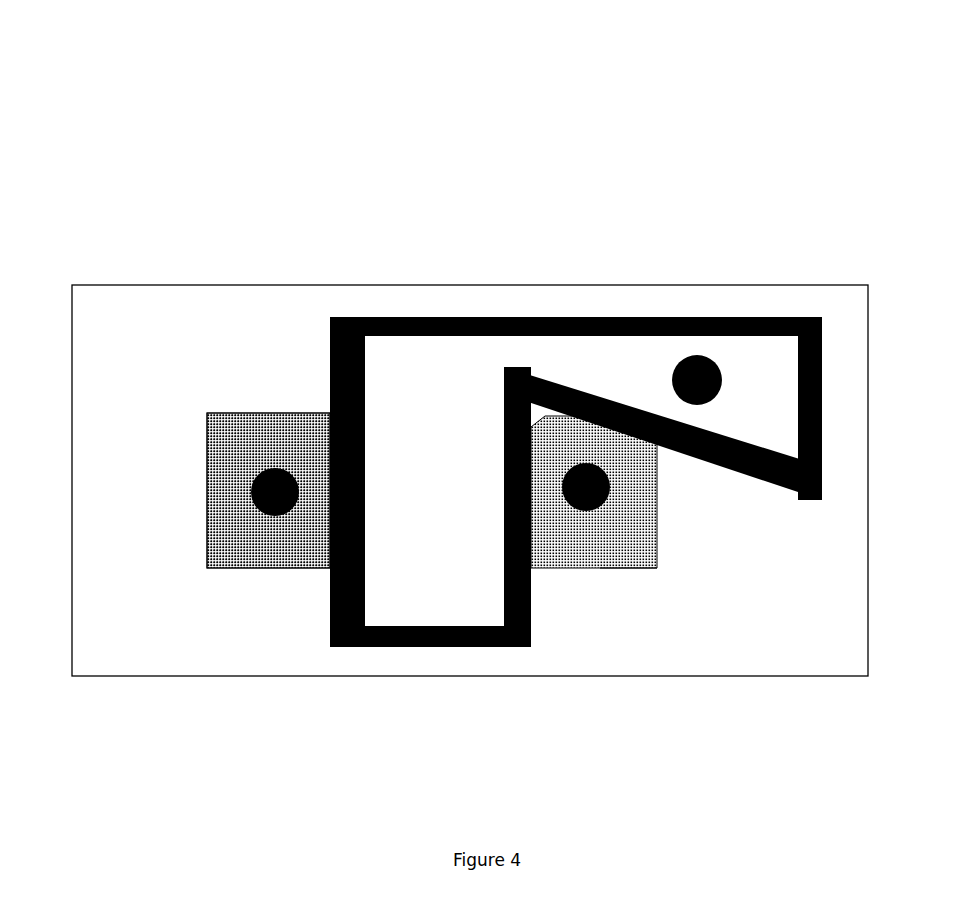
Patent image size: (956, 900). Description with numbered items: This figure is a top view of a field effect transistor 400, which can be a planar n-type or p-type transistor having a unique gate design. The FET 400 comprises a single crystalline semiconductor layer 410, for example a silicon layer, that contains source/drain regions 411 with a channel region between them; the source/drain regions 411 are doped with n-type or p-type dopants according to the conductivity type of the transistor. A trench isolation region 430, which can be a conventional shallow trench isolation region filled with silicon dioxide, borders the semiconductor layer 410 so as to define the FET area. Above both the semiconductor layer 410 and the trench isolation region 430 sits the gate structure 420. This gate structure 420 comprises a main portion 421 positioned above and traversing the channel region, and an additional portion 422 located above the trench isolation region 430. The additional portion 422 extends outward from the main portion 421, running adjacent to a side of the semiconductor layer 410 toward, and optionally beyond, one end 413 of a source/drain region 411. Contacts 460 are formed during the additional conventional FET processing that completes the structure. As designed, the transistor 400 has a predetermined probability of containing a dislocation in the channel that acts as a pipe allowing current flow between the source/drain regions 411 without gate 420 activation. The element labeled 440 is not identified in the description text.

The field effect transistor 400 is at (132, 85).
The single crystalline semiconductor layer 410 is at (296, 406).
The source/drain regions 411 is at (270, 570).
The end of a source/drain region 413 is at (651, 576).
The gate structure 420 is at (576, 524).
The main portion 421 is at (411, 541).
The additional portion 422 is at (746, 419).
The trench isolation region 430 is at (72, 480).
The trace segment 440 is at (505, 468).
The contact 460 is at (257, 513).